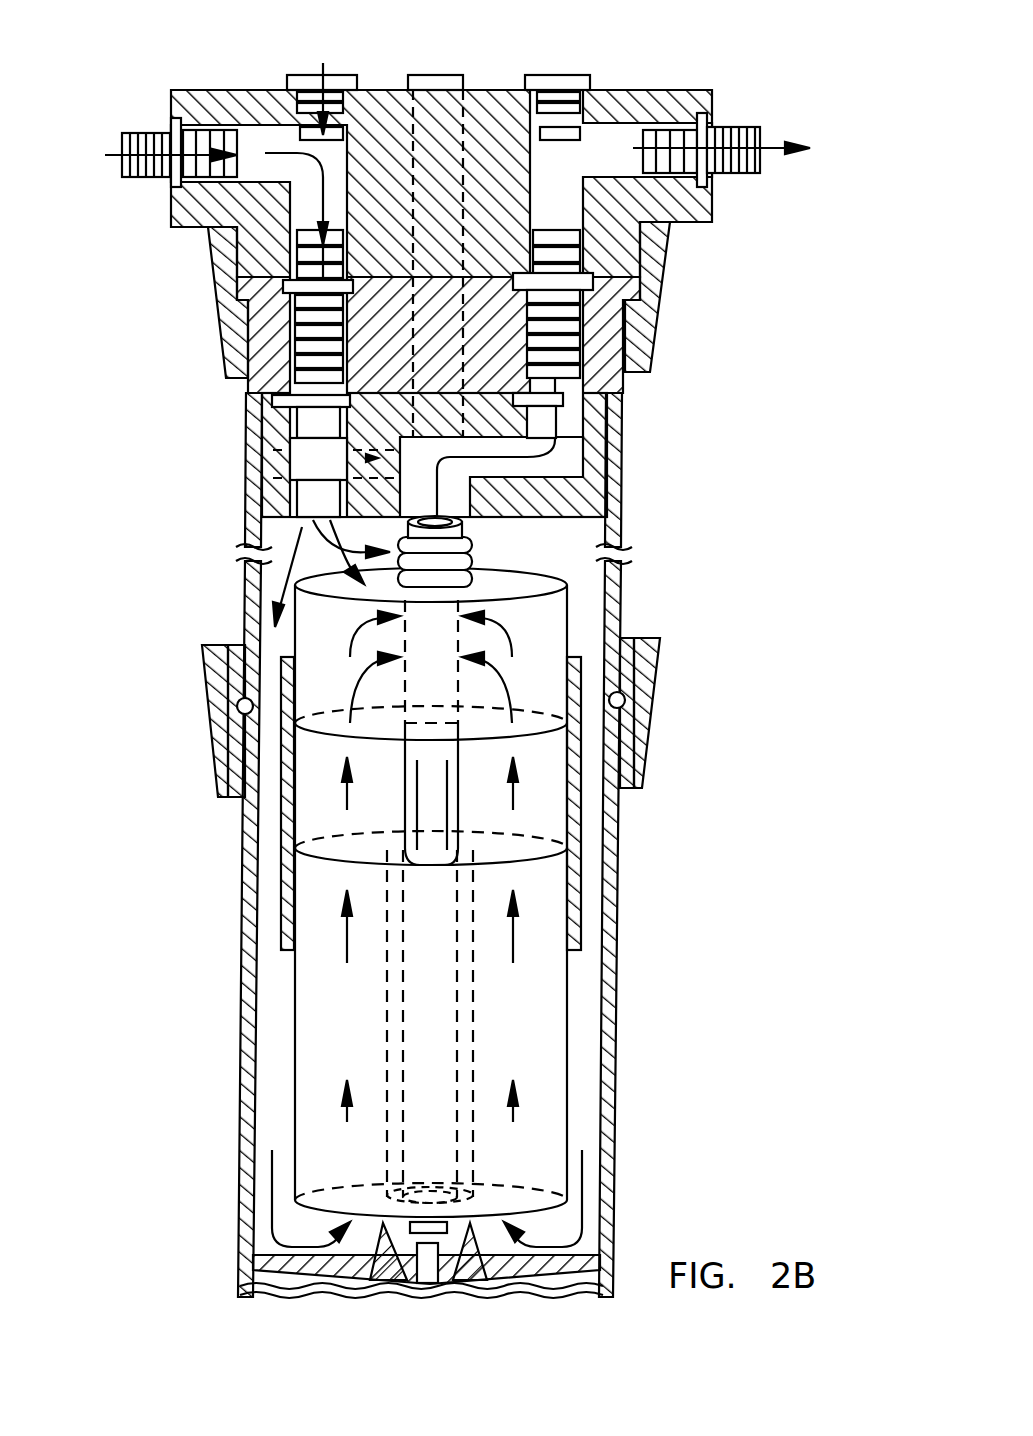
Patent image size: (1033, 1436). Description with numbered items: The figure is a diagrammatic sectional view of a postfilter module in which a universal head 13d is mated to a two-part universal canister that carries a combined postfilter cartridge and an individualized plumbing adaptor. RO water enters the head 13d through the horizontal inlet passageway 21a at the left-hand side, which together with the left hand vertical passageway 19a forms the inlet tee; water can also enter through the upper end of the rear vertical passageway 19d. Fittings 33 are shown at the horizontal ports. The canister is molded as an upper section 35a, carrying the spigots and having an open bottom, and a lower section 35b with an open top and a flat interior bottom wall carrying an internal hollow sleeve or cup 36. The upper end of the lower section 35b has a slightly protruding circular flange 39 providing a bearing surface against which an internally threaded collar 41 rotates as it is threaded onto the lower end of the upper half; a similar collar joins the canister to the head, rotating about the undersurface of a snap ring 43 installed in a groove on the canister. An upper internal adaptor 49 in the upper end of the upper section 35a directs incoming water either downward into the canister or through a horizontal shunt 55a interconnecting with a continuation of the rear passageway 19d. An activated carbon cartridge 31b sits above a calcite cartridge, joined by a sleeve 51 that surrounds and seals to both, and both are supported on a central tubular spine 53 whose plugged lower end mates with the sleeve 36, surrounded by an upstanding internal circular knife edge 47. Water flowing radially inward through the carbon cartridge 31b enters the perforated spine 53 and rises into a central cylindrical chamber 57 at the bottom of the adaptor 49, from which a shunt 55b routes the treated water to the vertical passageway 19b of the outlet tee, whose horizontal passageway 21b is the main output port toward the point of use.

The head 13d is at (177, 88).
The horizontal inlet passageway 21a is at (254, 148).
The left hand vertical passageway 19a is at (332, 153).
The rear vertical passageway 19d is at (498, 86).
The vertical passageway of the outlet tee 19b is at (565, 153).
The horizontal passageway 21b is at (625, 148).
The fitting bolt 33 is at (177, 183).
The snap ring 43 is at (660, 328).
The horizontal shunt 55a is at (241, 459).
The central cylindrical chamber 57 is at (436, 466).
The upper internal adaptor 49 is at (592, 465).
The upper section of canister 35a is at (240, 590).
The shunt 55b is at (440, 524).
The activated carbon cartridge 31b is at (527, 610).
The internally threaded collar 41 is at (212, 672).
The circular flange 39 is at (220, 763).
The central tubular spine 53 is at (427, 802).
The sleeve 51 is at (278, 888).
The lower section of canister 35b is at (238, 1103).
The internal circular knife edge 47 is at (383, 1226).
The internal circular hollow sleeve or cup 36 is at (450, 1226).